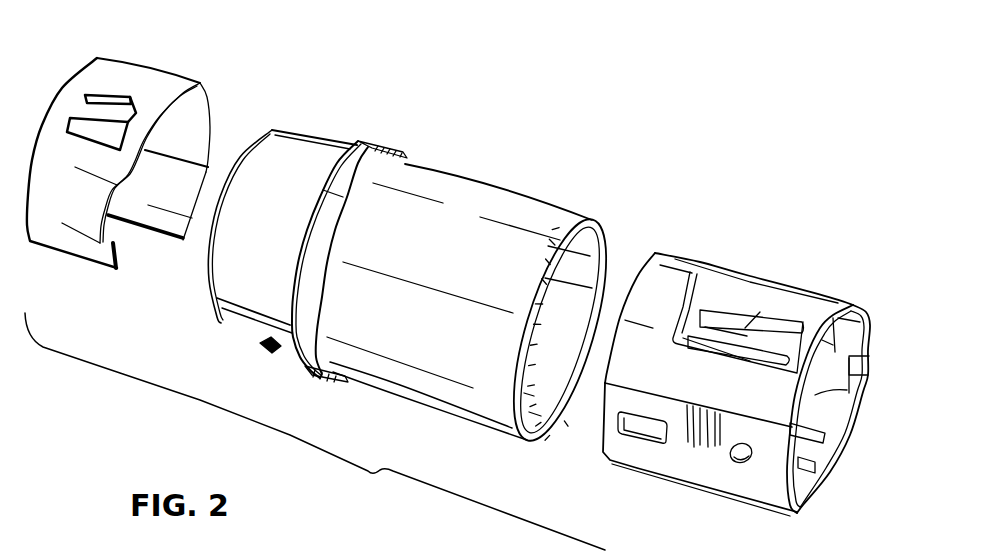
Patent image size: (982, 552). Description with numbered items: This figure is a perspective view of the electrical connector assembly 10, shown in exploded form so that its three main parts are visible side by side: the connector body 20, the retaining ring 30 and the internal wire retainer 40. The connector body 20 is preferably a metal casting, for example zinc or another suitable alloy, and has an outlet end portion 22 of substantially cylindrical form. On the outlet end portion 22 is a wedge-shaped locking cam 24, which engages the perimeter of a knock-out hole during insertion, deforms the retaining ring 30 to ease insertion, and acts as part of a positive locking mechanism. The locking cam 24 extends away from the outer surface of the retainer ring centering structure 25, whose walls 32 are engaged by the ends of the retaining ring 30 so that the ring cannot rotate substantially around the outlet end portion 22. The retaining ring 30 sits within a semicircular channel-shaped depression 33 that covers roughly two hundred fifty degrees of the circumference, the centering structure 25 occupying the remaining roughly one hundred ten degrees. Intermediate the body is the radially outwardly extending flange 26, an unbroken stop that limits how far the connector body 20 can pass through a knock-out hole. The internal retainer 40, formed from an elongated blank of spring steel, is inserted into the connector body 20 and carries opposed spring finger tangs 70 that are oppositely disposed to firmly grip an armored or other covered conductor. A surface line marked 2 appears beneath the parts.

The connector assembly 10 is at (512, 58).
The mounting surface / panel 2 is at (315, 431).
The connector body 20 is at (476, 307).
The outlet end portion 22 is at (472, 403).
The locking cam 24 is at (260, 343).
The retainer ring centering structure 25 is at (232, 317).
The flange 26 is at (362, 142).
The retaining ring 30 is at (133, 51).
The walls 32 is at (212, 305).
The channel-shaped depression 33 is at (288, 140).
The internal wire retainer 40 is at (736, 352).
The spring finger tangs 70 is at (743, 313).